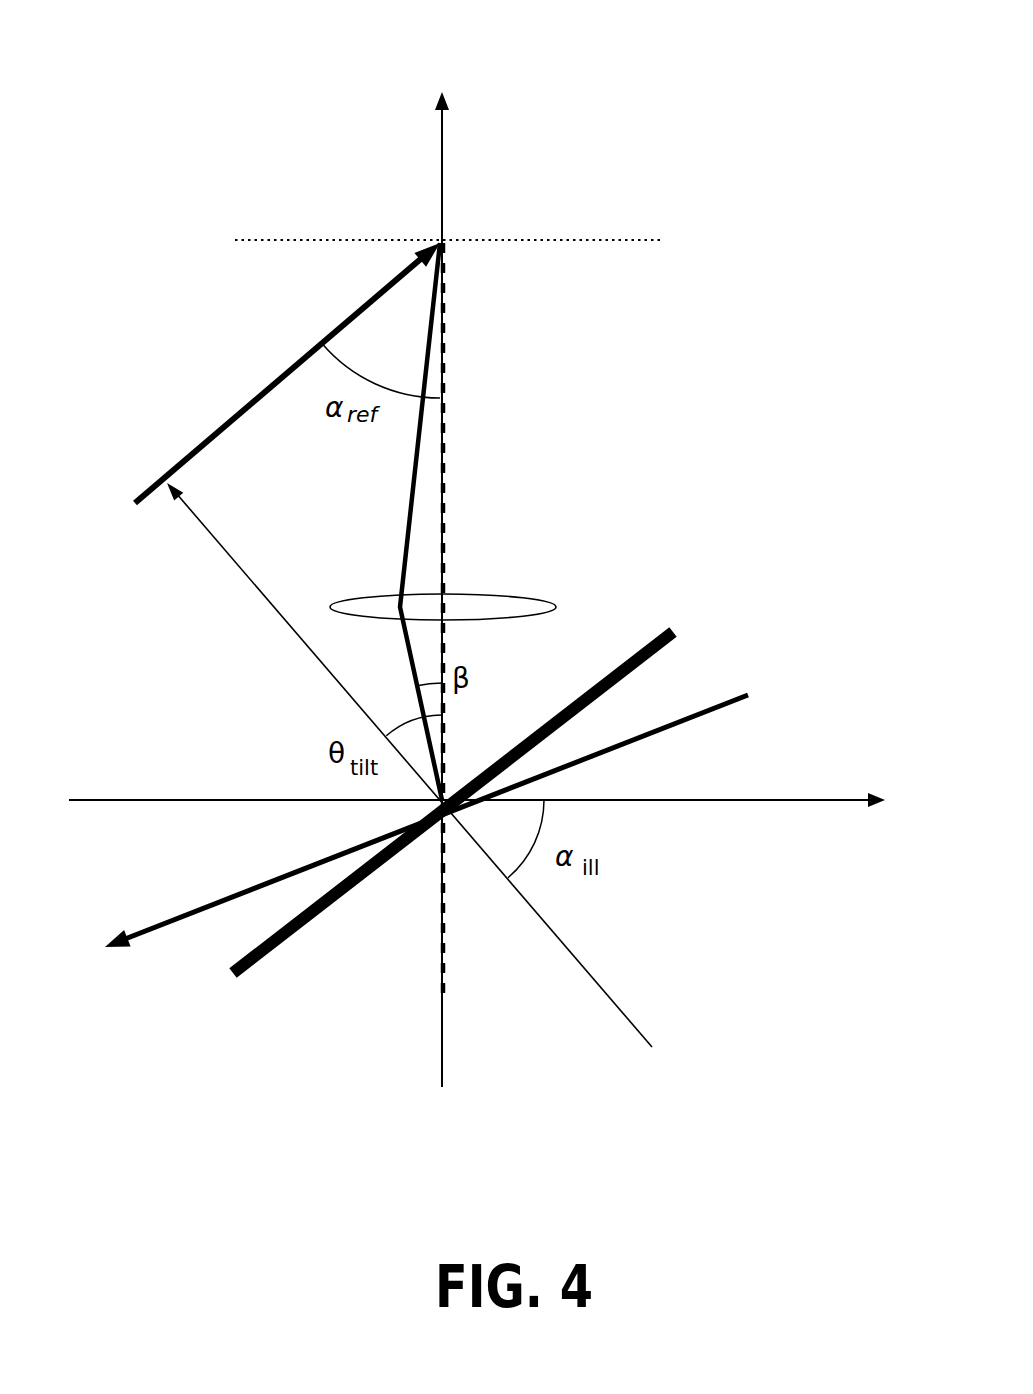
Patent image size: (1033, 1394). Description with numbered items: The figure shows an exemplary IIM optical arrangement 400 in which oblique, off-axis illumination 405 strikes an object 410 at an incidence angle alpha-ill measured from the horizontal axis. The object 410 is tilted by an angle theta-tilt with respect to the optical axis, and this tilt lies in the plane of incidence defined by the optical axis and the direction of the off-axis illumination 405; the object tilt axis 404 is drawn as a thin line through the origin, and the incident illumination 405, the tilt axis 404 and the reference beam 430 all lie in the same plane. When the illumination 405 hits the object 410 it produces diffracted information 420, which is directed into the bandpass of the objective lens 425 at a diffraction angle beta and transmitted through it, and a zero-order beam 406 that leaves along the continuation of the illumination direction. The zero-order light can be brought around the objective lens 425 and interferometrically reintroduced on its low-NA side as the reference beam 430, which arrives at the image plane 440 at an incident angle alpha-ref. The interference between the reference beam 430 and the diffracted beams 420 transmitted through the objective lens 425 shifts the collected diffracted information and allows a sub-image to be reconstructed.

The IIM optical arrangement 400 is at (514, 56).
The object tilt axis 404 is at (424, 783).
The off-axis illumination 405 is at (468, 807).
The zero-order beam 406 is at (89, 950).
The object 410 is at (476, 774).
The diffracted information 420 is at (404, 504).
The objective lens 425 is at (443, 587).
The reference beam 430 is at (287, 373).
The image plane 440 is at (447, 223).